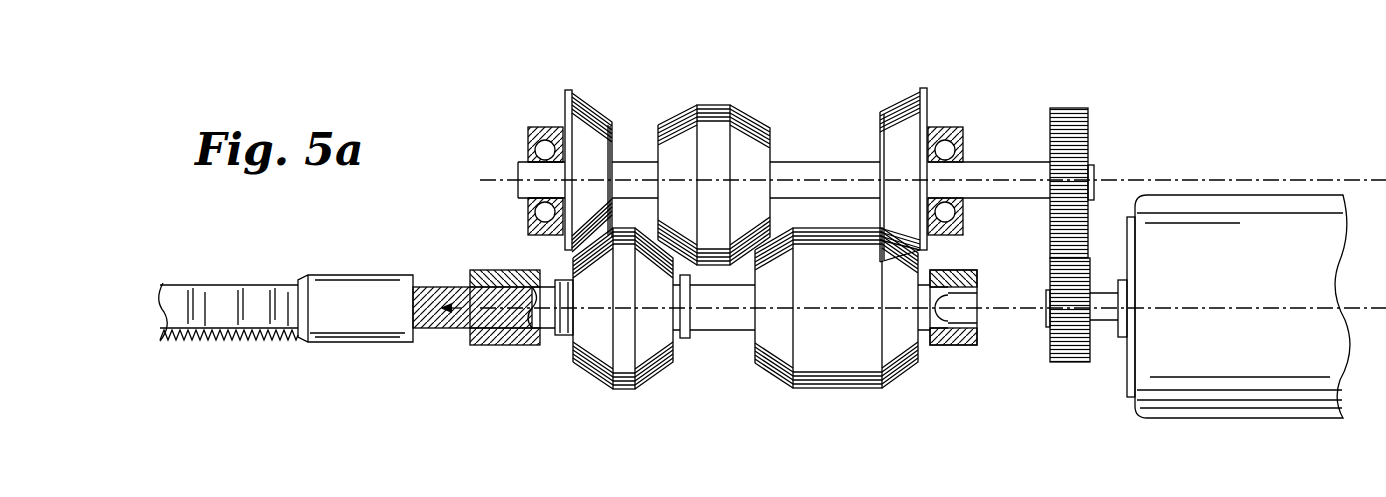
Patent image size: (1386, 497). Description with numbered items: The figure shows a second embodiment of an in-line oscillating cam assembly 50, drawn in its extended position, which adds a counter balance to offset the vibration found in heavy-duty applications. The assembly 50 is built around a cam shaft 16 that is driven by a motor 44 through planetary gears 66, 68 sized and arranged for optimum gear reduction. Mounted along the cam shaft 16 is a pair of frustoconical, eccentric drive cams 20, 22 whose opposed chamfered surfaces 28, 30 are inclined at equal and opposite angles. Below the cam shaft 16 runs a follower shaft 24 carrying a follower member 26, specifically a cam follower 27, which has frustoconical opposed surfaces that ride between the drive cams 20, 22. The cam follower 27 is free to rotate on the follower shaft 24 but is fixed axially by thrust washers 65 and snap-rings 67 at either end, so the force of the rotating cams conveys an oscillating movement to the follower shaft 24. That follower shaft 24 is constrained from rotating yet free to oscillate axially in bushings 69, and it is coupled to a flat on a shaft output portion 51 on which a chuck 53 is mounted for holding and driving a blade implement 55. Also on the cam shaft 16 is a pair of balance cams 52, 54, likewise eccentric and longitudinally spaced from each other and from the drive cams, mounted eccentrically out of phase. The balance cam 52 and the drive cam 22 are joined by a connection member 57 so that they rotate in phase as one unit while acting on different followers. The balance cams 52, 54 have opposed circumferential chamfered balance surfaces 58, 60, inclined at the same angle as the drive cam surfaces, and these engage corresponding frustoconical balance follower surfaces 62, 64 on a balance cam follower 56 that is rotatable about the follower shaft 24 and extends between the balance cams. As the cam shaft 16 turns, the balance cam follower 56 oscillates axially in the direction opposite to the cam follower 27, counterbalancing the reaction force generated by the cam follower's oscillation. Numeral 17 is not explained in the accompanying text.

The cam shaft 16 is at (1040, 200).
The bearing 17 is at (543, 127).
The drive cam 20 is at (586, 93).
The drive cam 22 is at (660, 140).
The follower shaft 24 is at (730, 332).
The follower member 26 is at (584, 380).
The cam follower 27 is at (628, 391).
The opposed surface 28 is at (614, 140).
The opposed surface 30 is at (645, 162).
The motor 44 is at (1288, 222).
The in-line oscillating cam assembly 50 is at (952, 78).
The shaft output portion 51 is at (438, 330).
The balance cam 52 is at (782, 162).
The chuck 53 is at (380, 275).
The balance cam 54 is at (868, 145).
The blade implement 55 is at (255, 308).
The balance cam follower 56 is at (865, 388).
The connection member 57 is at (710, 105).
The chamfered balance surface 58 is at (757, 123).
The chamfered balance surface 60 is at (902, 97).
The balance follower surface 62 is at (760, 373).
The balance follower surface 64 is at (913, 368).
The thrust washer 65 is at (566, 338).
The planetary gear 66 is at (1073, 363).
The snap-ring 67 is at (688, 340).
The planetary gear 68 is at (1095, 148).
The bushing 69 is at (500, 270).